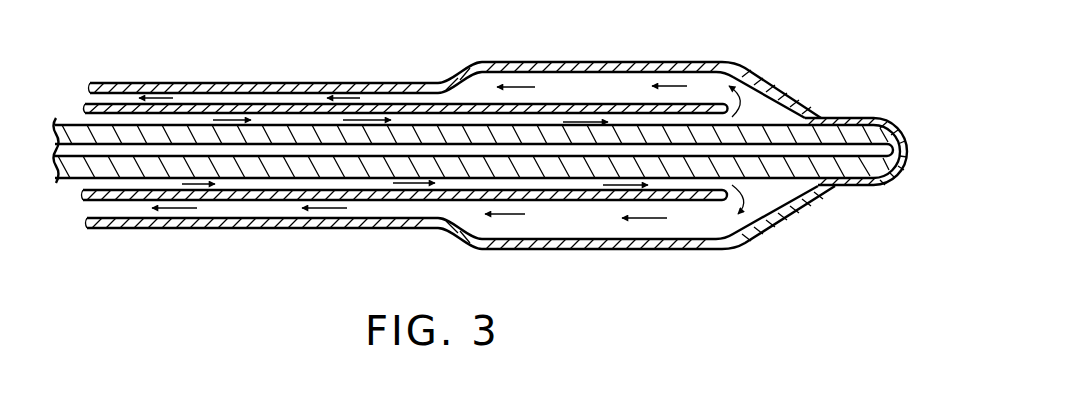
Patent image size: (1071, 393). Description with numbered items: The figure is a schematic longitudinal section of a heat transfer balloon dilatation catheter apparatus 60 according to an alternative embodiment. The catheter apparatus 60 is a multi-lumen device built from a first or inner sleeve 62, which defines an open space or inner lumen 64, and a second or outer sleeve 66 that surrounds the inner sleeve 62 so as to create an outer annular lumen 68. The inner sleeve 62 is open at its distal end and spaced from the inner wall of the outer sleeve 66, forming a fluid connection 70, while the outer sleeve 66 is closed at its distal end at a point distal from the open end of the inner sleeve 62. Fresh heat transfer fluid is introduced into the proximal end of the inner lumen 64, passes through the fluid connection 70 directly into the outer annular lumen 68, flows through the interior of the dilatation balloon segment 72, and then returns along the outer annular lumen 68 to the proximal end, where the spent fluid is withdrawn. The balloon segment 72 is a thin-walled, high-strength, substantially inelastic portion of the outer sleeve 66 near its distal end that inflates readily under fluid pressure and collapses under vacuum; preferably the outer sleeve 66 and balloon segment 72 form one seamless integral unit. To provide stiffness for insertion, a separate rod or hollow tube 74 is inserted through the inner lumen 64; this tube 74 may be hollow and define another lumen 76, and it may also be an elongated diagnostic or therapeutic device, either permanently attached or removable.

The catheter apparatus 60 is at (464, 141).
The inner sleeve 62 is at (368, 198).
The inner lumen 64 is at (270, 186).
The outer sleeve 66 is at (172, 229).
The outer annular lumen 68 is at (220, 209).
The fluid connection 70 is at (778, 105).
The dilatation balloon segment 72 is at (570, 62).
The tube 74 is at (808, 117).
The lumen 76 is at (73, 153).